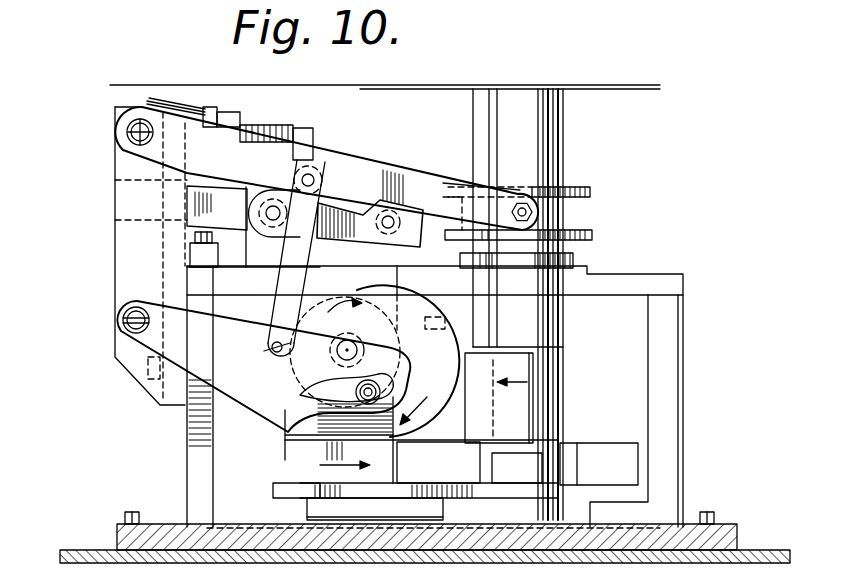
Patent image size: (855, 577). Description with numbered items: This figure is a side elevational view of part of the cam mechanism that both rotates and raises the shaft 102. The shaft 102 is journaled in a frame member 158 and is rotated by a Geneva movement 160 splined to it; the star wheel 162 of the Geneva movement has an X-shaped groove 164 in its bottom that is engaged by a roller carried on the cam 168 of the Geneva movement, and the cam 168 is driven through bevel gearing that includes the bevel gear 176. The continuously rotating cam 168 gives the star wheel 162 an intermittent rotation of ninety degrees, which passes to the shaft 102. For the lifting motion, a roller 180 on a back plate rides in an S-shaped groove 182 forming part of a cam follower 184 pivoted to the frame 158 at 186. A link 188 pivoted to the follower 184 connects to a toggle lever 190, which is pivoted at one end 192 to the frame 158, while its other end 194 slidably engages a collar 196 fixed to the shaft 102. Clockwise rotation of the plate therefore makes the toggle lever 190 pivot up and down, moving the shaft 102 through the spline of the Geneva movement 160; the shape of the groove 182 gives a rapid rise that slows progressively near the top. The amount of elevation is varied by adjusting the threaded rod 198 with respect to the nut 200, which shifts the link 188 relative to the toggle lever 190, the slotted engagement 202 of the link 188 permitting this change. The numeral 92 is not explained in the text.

The cam 92 is at (430, 331).
The shaft 102 is at (548, 124).
The frame member 158 is at (628, 282).
The Geneva movement 160 is at (562, 395).
The star wheel 162 is at (615, 470).
The X-shaped groove 164 is at (563, 443).
The cam 168 is at (297, 474).
The bevel gear 176 is at (383, 330).
The roller 180 is at (395, 401).
The S-shaped groove 182 is at (290, 427).
The cam follower 184 is at (228, 377).
The pivot 186 is at (123, 316).
The link 188 is at (325, 202).
The toggle lever 190 is at (410, 183).
The toggle lever end 192 is at (127, 132).
The toggle lever other end 194 is at (479, 198).
The collar 196 is at (588, 190).
The threaded rod 198 is at (186, 106).
The nut 200 is at (337, 140).
The slotted engagement 202 is at (270, 172).